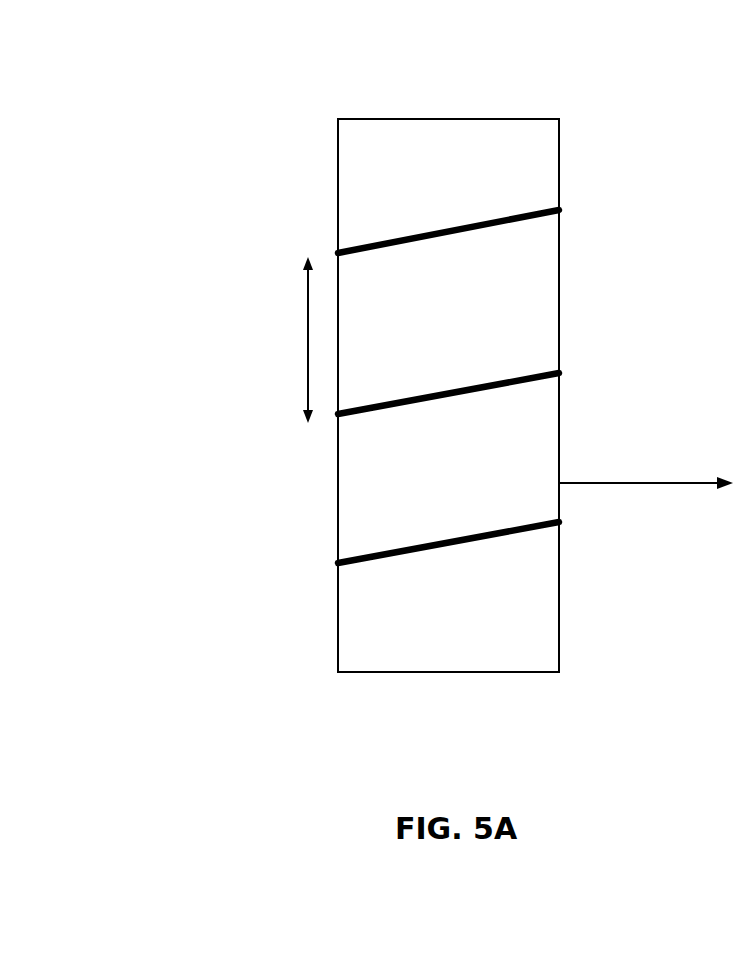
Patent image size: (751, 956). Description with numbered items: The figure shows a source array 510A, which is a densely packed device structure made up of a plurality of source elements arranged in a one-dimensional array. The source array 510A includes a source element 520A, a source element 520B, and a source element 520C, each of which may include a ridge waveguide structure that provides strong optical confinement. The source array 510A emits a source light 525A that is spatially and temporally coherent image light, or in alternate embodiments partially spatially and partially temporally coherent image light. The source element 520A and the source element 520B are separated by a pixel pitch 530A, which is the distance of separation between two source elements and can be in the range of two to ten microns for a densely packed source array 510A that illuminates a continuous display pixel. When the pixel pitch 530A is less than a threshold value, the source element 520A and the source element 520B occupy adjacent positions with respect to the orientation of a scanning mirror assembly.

The source array 510A is at (359, 359).
The source element 520A is at (497, 226).
The source element 520B is at (490, 389).
The source element 520C is at (465, 542).
The source light 525A is at (665, 483).
The pixel pitch 530A is at (308, 355).